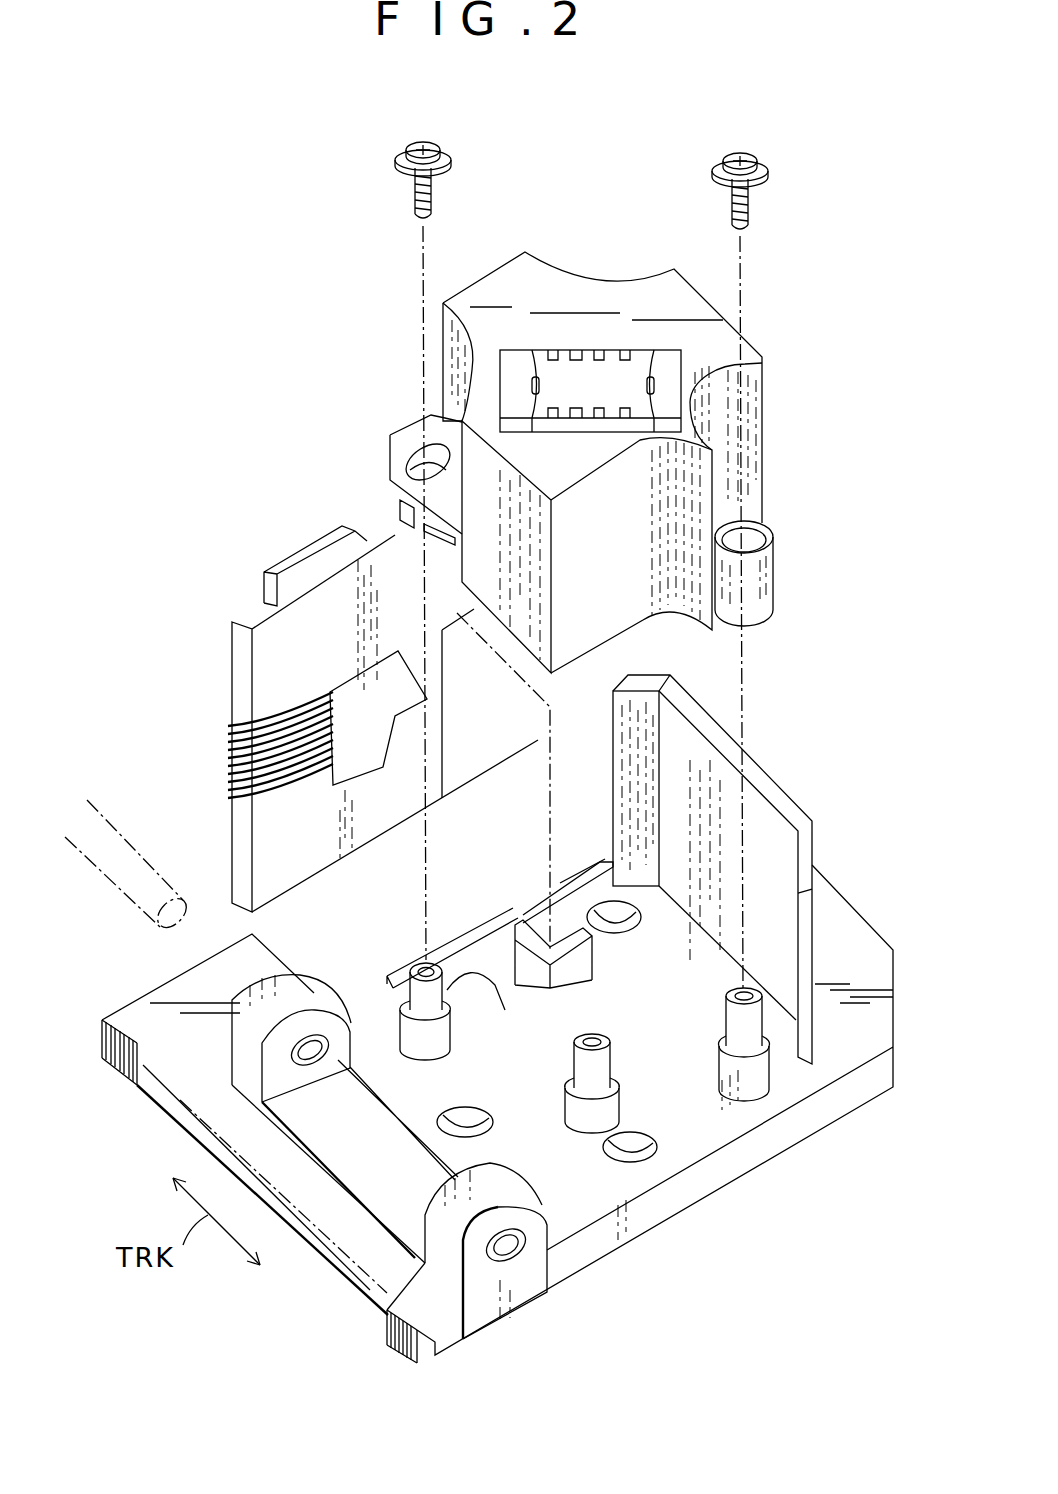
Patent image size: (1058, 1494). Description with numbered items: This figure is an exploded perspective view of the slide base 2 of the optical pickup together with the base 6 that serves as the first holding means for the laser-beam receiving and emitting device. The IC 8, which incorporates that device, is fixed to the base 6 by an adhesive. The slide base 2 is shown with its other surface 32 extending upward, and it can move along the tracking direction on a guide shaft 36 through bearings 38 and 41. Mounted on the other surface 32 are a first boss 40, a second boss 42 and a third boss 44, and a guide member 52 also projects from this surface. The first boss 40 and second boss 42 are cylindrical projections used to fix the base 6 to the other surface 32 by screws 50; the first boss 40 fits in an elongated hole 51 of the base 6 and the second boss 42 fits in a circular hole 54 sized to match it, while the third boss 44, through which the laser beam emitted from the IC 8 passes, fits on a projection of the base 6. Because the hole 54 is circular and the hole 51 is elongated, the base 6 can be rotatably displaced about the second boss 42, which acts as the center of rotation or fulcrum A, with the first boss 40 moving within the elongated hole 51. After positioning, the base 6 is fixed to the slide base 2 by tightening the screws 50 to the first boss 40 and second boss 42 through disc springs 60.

The slide base 2 is at (697, 1193).
The base 6 is at (676, 293).
The IC 8 is at (585, 373).
The other surface 32 is at (848, 1047).
The guide shaft 36 is at (140, 855).
The bearing 38 is at (247, 1053).
The first boss 40 is at (420, 965).
The bearing 41 is at (432, 1240).
The second boss 42 is at (730, 1021).
The third boss 44 is at (608, 1069).
The screws 50 is at (412, 144).
The hole 51 is at (405, 422).
The guide member 52 is at (772, 790).
The hole 54 is at (774, 565).
The disc springs 60 is at (452, 166).
The fulcrum A is at (745, 701).